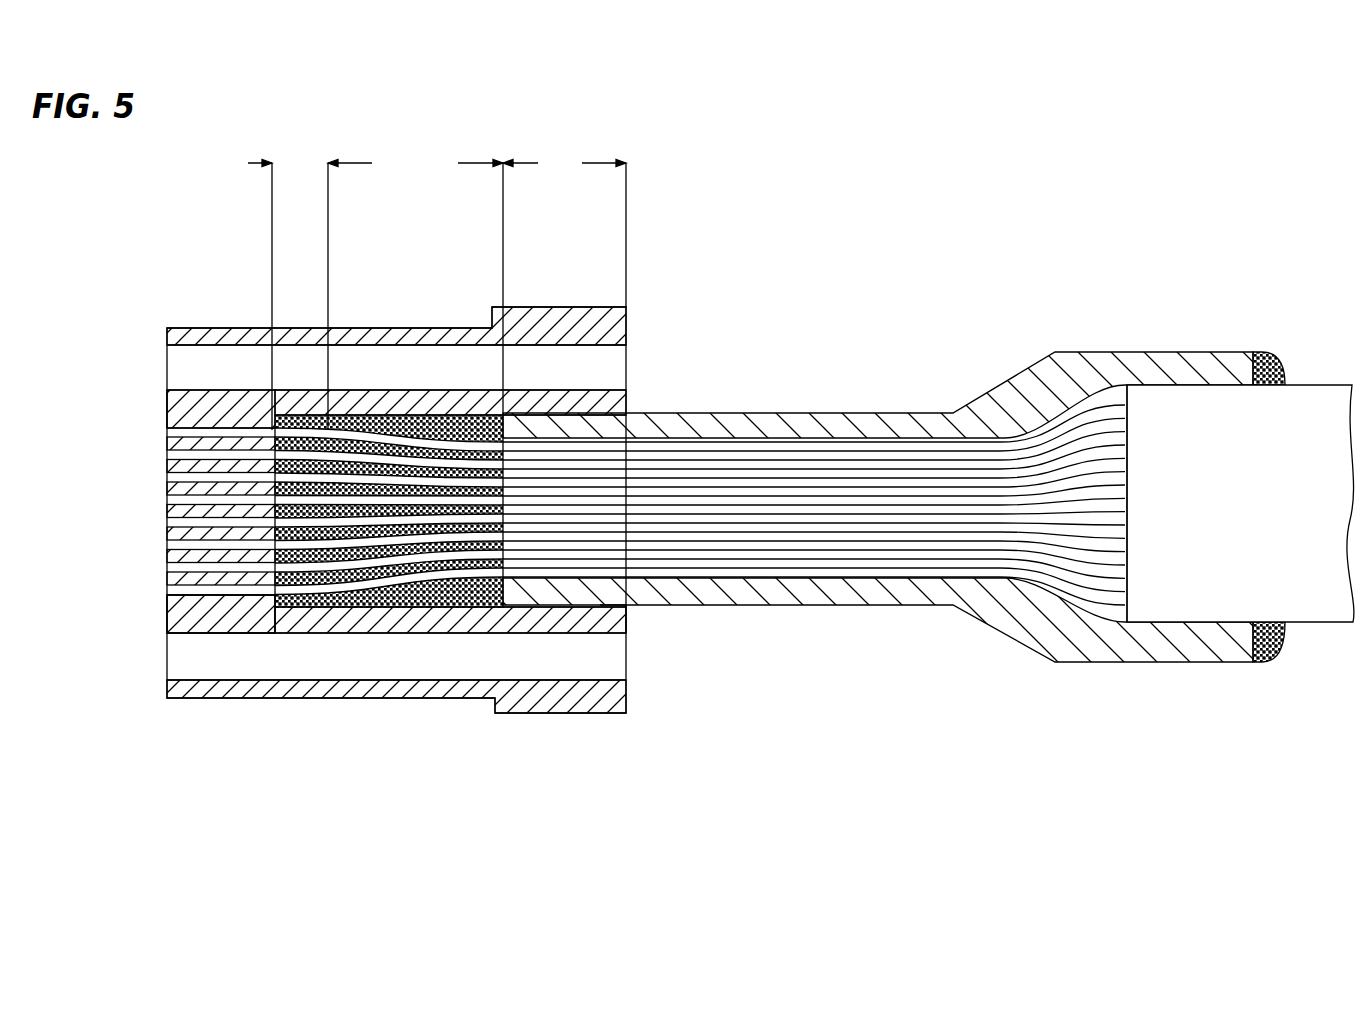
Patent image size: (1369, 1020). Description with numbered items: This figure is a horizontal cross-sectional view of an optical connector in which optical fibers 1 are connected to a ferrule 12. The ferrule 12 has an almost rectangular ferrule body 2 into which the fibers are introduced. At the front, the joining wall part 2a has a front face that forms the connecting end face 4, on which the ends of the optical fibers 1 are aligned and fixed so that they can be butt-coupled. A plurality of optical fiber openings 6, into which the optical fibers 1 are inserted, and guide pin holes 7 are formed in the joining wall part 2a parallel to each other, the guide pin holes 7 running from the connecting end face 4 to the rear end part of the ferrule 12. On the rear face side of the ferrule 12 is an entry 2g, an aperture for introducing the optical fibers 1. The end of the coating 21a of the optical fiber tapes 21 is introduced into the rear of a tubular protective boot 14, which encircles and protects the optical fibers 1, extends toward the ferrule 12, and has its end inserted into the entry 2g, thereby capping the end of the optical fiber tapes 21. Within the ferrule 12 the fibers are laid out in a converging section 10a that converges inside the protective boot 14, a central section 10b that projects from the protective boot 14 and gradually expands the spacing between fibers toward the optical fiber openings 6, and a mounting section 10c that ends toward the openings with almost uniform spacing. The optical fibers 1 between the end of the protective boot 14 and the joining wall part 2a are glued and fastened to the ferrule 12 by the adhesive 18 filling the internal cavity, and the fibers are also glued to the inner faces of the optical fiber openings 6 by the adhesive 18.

The optical fibers 1 is at (262, 478).
The ferrule body 2 is at (446, 620).
The joining wall part 2a is at (167, 416).
The entry 2g is at (638, 600).
The connecting end face 4 is at (167, 612).
The optical fiber openings 6 is at (167, 482).
The guide pin holes 7 is at (238, 378).
The converging section 10a is at (564, 217).
The central section 10b is at (415, 368).
The mounting section 10c is at (288, 279).
The ferrule 12 is at (606, 738).
The protective boot 14 is at (885, 418).
The adhesive 18 is at (430, 482).
The optical fiber tapes 21 is at (1308, 400).
The coating 21a is at (1175, 405).